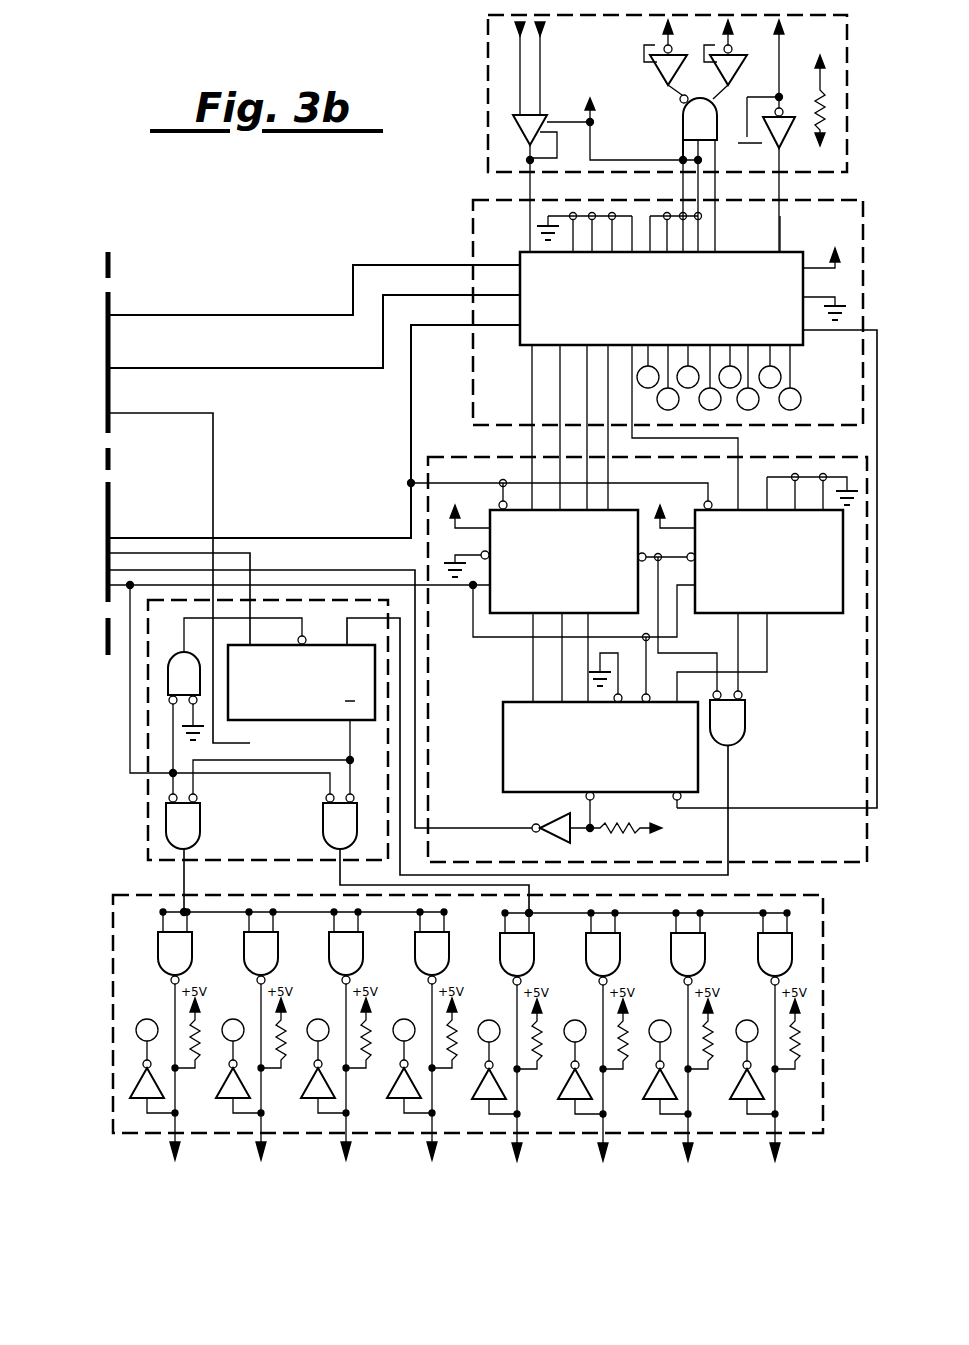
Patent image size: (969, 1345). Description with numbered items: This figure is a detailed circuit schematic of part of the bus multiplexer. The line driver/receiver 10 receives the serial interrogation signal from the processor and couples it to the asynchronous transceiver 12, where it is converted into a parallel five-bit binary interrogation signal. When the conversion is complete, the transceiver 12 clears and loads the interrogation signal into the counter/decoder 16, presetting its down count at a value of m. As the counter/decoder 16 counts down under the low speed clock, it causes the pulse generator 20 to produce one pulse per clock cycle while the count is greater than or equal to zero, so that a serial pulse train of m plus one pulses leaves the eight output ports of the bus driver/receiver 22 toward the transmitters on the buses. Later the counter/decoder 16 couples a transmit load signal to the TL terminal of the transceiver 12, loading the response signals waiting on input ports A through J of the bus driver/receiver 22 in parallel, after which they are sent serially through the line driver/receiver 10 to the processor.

The line driver/receiver 10 is at (488, 62).
The asynchronous transceiver 12 is at (473, 212).
The counter/decoder 16 is at (450, 457).
The pulse generator 20 is at (315, 600).
The bus driver/receiver 22 is at (235, 1135).